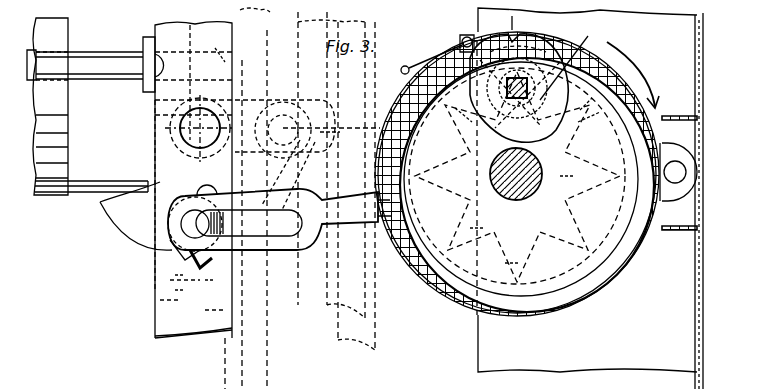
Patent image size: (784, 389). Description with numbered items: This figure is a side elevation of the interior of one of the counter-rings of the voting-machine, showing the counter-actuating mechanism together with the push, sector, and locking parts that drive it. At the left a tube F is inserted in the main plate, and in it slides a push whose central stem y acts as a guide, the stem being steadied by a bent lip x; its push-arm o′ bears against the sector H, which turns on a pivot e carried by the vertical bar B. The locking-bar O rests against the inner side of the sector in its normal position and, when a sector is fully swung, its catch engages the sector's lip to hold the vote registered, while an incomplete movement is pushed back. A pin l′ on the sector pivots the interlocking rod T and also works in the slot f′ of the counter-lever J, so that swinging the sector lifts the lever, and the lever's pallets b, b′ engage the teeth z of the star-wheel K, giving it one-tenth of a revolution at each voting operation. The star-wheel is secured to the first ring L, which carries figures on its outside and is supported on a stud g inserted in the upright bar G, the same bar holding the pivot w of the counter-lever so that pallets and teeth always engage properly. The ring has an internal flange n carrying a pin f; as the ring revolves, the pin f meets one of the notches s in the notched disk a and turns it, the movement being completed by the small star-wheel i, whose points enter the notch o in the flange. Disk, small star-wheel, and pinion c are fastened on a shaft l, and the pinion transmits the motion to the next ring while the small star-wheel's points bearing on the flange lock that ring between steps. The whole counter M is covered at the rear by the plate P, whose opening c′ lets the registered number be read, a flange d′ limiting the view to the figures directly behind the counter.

The tube F is at (60, 106).
The central stem y is at (113, 52).
The bent lip x is at (143, 88).
The push-arm o′ is at (100, 182).
The interlocking rod T is at (193, 180).
The vertical bar B is at (226, 282).
The locking-bar O is at (296, 76).
The pivot e is at (200, 128).
The sector H is at (214, 195).
The pin l′ is at (170, 246).
The slot f′ is at (285, 232).
The counter-lever J is at (350, 240).
The star-wheel i is at (428, 129).
The internal flange n is at (517, 174).
The ring L is at (622, 258).
The star-wheel K is at (517, 176).
The teeth z is at (486, 199).
The pallet b is at (522, 232).
The stud g is at (516, 174).
The notched disk a is at (518, 88).
The pinion c is at (564, 58).
The shaft l is at (584, 99).
The notch s is at (521, 65).
The pin f is at (468, 30).
The notch o is at (427, 63).
The counter M is at (432, 44).
The pallet b′ is at (622, 62).
The pivot w is at (684, 170).
The opening c′ is at (690, 134).
The flange d′ is at (676, 116).
The upright bar G is at (587, 190).
The plate P is at (710, 201).